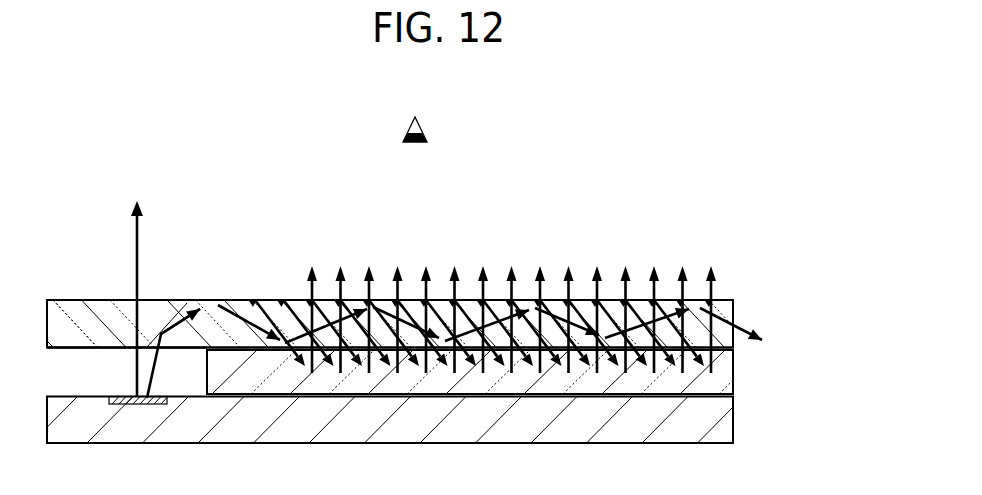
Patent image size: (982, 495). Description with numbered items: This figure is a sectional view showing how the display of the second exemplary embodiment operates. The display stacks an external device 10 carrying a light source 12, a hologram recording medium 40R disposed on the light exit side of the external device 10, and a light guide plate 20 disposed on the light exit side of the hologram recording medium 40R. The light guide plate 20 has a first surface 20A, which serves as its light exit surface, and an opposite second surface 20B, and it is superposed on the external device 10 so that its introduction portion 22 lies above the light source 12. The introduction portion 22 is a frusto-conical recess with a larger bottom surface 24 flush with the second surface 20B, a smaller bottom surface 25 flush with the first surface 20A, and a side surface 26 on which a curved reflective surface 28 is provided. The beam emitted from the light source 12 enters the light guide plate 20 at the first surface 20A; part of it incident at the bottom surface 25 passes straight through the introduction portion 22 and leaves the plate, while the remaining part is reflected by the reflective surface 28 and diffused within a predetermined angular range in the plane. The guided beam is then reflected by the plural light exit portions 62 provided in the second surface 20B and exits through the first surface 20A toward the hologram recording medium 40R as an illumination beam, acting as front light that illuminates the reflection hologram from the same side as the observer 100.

The observer 100 is at (422, 130).
The external device 10 is at (720, 425).
The light source 12 is at (147, 408).
The light guide plate 20 is at (722, 308).
The first surface 20A is at (722, 348).
The second surface 20B is at (723, 298).
The introduction portion 22 is at (153, 293).
The bottom surface 24 is at (122, 298).
The bottom surface 25 is at (130, 349).
The side surface 26 is at (192, 300).
The reflective surface 28 is at (454, 326).
The hologram recording medium 40R is at (720, 380).
The light exit portions 62 is at (548, 303).